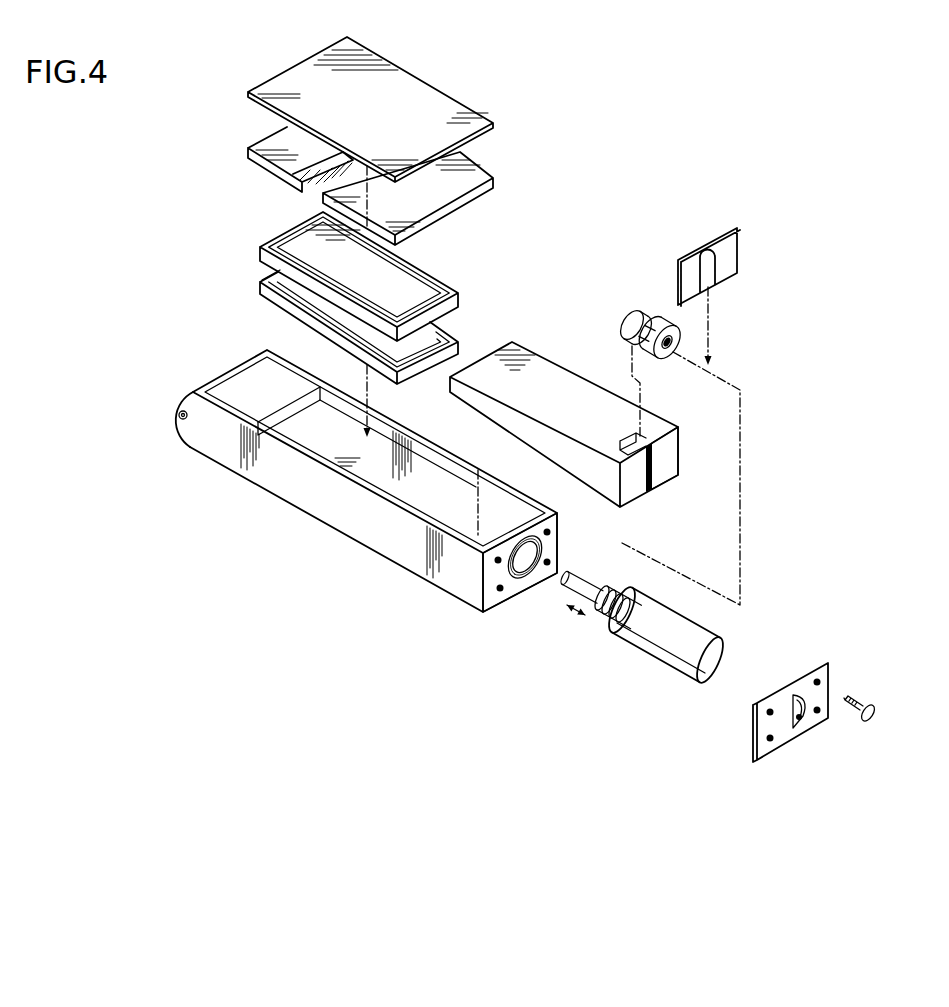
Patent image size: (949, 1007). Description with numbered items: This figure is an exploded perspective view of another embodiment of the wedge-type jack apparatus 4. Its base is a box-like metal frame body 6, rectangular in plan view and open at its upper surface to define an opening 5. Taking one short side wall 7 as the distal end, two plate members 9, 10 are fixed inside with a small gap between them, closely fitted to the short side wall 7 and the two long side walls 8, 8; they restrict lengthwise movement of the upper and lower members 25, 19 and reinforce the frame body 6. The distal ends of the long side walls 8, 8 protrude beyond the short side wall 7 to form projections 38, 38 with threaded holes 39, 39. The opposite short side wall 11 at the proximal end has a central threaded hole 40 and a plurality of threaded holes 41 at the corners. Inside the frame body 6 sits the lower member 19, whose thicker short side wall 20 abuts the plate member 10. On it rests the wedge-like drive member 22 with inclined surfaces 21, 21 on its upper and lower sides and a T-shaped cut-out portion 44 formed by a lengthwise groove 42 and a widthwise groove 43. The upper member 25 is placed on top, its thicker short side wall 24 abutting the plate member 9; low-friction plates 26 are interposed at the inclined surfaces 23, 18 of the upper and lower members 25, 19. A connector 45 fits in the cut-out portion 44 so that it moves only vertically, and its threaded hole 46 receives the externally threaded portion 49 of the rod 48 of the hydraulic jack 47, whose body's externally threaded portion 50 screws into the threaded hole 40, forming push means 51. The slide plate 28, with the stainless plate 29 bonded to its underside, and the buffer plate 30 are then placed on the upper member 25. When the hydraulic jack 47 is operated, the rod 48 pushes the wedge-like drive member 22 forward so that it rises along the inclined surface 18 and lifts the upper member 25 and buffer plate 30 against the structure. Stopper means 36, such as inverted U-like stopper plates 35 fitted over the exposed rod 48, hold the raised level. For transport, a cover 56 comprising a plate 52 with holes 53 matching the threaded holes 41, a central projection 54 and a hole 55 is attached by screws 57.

The wedge-type jack apparatus 4 is at (186, 281).
The opening 5 is at (383, 440).
The frame body 6 is at (346, 543).
The short side wall 7 is at (223, 372).
The long side walls 8 is at (412, 447).
The plate member 9 is at (287, 399).
The plate member 10 is at (297, 429).
The short side wall 11 is at (527, 527).
The inclined surface 18 is at (452, 318).
The lower member 19 is at (249, 309).
The short side wall 20 is at (258, 291).
The inclined surfaces 21 is at (490, 437).
The wedge-like drive member 22 is at (586, 370).
The inclined surface 23 is at (337, 308).
The short side wall 24 is at (258, 252).
The upper member 25 is at (454, 271).
The low-friction plates 26 is at (408, 347).
The slide plate 28 is at (470, 180).
The stainless plate 29 is at (301, 178).
The buffer plate 30 is at (370, 109).
The stopper plates 35 is at (735, 257).
The stopper means 36 is at (747, 223).
The projections 38 is at (183, 430).
The threaded holes 39 is at (173, 418).
The threaded hole 40 is at (540, 557).
The threaded holes 41 is at (552, 532).
The groove 42 is at (655, 461).
The groove 43 is at (630, 437).
The cut-out portion 44 is at (654, 430).
The connector 45 is at (630, 306).
The threaded hole 46 is at (670, 347).
The hydraulic jack 47 is at (662, 620).
The rod 48 is at (620, 600).
The externally threaded portion 49 is at (593, 592).
The externally threaded portion 50 is at (603, 622).
The push means 51 is at (727, 641).
The plate 52 is at (787, 736).
The holes 53 is at (820, 682).
The projection 54 is at (803, 722).
The hole 55 is at (795, 714).
The cover 56 is at (749, 733).
The screws 57 is at (877, 711).